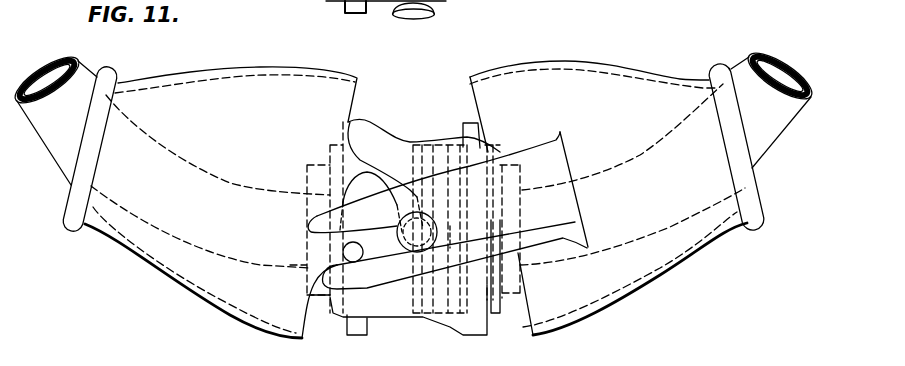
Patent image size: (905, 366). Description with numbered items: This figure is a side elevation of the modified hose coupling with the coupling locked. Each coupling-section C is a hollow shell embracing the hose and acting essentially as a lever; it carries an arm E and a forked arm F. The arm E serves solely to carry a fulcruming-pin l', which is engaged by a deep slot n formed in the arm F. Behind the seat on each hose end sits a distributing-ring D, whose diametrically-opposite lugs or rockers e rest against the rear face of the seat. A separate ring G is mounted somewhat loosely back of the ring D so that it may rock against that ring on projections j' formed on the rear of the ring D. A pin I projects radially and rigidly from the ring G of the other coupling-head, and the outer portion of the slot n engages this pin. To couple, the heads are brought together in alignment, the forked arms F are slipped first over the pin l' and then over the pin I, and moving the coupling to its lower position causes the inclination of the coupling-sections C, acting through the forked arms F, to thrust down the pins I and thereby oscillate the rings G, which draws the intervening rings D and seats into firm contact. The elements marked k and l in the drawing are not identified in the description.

The pin I is at (355, 12).
The strap k is at (413, 147).
The coupling-section C is at (413, 191).
The arm E is at (352, 160).
The deep slot n is at (434, 192).
The pivot l is at (417, 232).
The fulcruming-pin l' is at (353, 252).
The forked arm F is at (455, 210).
The ring G is at (348, 333).
The lug or rocker e is at (436, 144).
The distributing-ring D is at (450, 315).
The projection j' is at (463, 228).